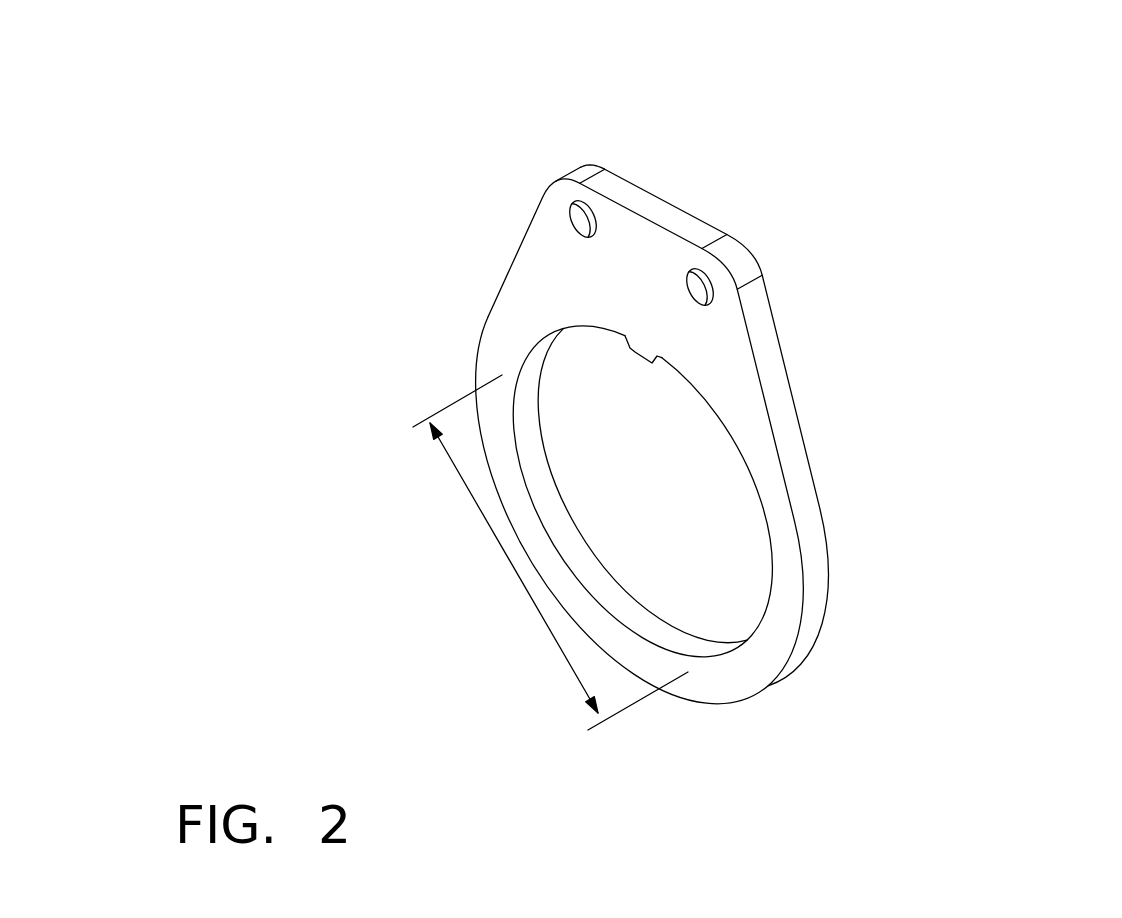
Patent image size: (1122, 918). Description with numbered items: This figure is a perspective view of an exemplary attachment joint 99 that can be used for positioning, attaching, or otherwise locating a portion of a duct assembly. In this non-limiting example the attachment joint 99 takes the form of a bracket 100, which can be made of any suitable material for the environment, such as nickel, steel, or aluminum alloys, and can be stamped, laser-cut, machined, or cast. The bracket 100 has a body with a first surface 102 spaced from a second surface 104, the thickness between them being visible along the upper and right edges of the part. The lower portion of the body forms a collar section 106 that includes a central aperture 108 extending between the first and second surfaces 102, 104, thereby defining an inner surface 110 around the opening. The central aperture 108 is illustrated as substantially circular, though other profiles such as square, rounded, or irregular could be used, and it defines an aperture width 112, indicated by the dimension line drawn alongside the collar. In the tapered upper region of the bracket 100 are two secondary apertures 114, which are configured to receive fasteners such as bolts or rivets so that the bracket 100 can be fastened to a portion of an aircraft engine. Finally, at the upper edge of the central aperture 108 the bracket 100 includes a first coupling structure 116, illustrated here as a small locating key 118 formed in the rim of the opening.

The attachment joint 99 is at (980, 98).
The bracket 100 is at (730, 137).
The first surface 102 is at (552, 224).
The second surface 104 is at (767, 312).
The collar section 106 is at (840, 532).
The central aperture 108 is at (713, 412).
The inner surface 110 is at (571, 553).
The aperture width 112 is at (498, 537).
The secondary apertures 114 is at (590, 205).
The first coupling structure 116 is at (645, 395).
The locating key 118 is at (633, 355).